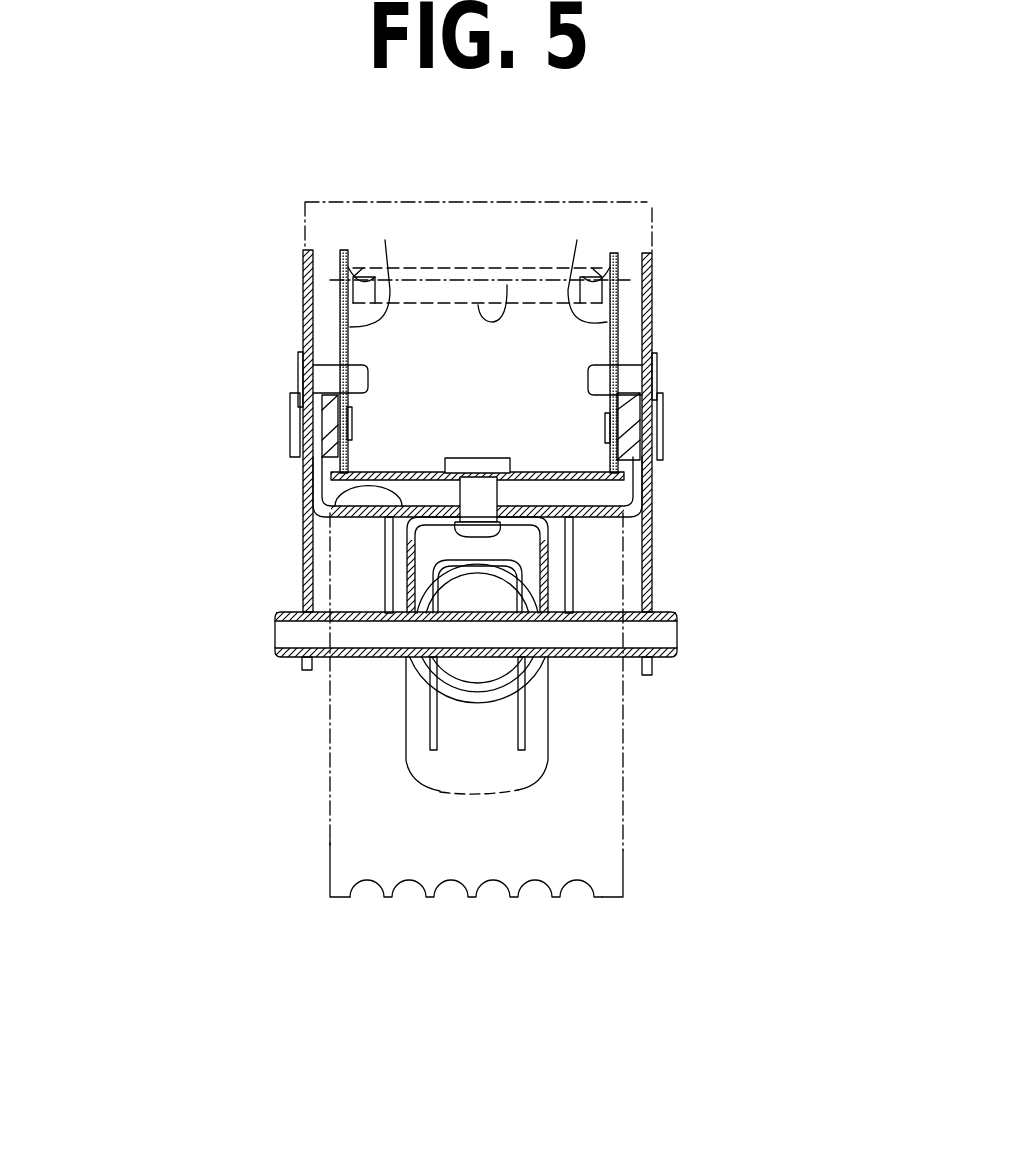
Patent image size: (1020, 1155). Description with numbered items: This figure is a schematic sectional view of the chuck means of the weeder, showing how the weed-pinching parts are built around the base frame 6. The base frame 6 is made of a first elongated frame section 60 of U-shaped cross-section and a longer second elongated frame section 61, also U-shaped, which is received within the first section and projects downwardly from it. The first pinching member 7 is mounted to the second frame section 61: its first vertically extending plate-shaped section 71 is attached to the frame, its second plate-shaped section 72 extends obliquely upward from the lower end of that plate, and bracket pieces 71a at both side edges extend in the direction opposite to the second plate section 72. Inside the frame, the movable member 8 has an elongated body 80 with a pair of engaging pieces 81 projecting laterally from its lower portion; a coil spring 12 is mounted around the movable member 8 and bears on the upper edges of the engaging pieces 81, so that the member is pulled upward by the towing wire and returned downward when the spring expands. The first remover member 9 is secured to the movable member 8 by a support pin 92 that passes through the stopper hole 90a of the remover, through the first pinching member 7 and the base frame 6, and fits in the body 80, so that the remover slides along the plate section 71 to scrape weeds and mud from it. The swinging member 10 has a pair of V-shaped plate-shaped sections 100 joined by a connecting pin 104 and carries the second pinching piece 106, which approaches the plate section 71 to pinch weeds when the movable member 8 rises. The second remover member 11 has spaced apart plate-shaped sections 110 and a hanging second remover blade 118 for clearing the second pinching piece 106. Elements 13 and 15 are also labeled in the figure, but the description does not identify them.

The base frame 6 is at (582, 597).
The first pinching member 7 is at (593, 518).
The movable member 8 is at (515, 763).
The first remover member 9 is at (413, 457).
The swinging member 10 is at (305, 262).
The second remover member 11 is at (618, 258).
The coil spring 12 is at (440, 620).
The engaging portion 13 is at (290, 422).
The bracket 15 is at (297, 375).
The first elongated frame section 60 is at (540, 683).
The second elongated frame section 61 is at (415, 555).
The first vertically extending plate-shaped section 71 is at (365, 500).
The bracket pieces 71a is at (310, 490).
The second plate-shaped section 72 is at (623, 850).
The elongated body 80 is at (477, 560).
The engaging pieces 81 is at (432, 745).
The stopper hole 90a is at (482, 463).
The support pin 92 is at (470, 458).
The spaced apart plate-shaped sections 100 is at (300, 308).
The connecting pin 104 is at (678, 637).
The second pinching piece 106 is at (447, 268).
The spaced apart plate-shaped sections 110 is at (577, 240).
The second remover blade 118 is at (507, 285).